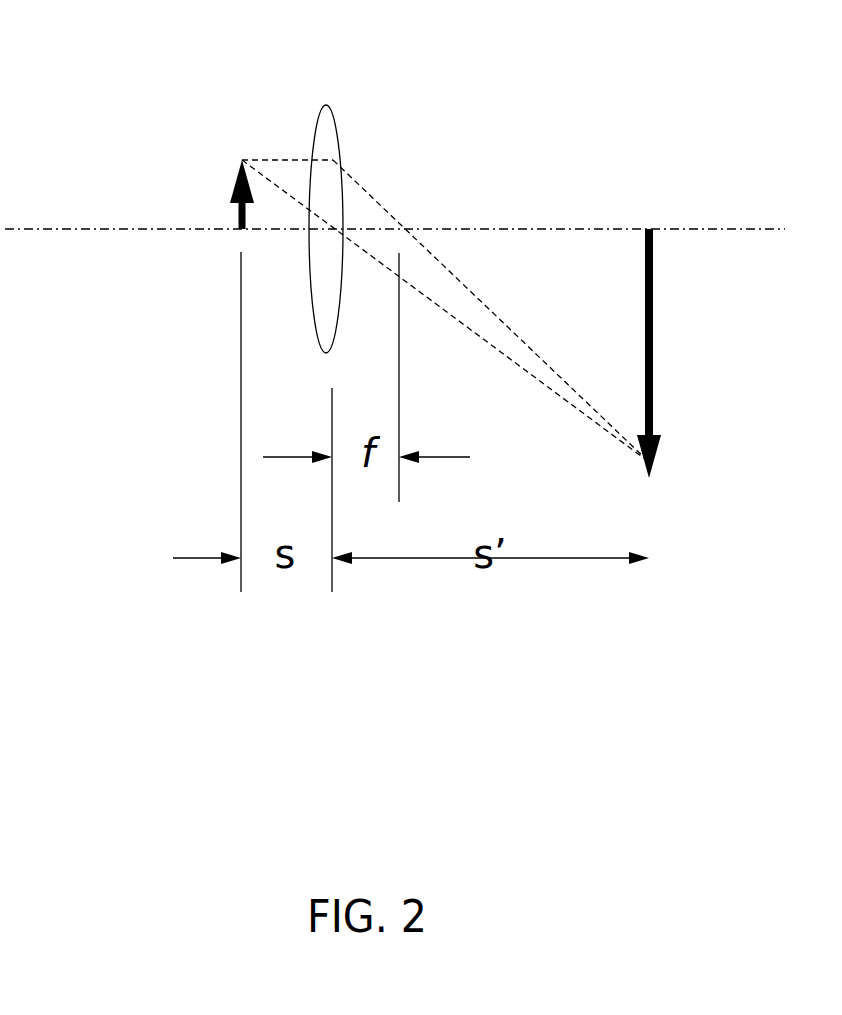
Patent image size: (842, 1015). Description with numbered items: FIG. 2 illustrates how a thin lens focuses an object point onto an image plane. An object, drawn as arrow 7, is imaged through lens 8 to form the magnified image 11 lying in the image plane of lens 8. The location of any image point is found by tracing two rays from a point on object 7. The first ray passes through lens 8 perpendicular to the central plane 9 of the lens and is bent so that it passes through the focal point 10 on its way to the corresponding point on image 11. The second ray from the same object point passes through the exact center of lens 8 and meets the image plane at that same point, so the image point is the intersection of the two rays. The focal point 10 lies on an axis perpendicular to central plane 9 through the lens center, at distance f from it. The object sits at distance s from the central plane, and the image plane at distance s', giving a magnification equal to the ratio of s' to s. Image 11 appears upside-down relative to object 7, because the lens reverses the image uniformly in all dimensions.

The arrow 7 is at (227, 193).
The lens 8 is at (343, 127).
The central plane 9 is at (315, 128).
The focal point 10 is at (420, 188).
The magnified image 11 is at (660, 435).